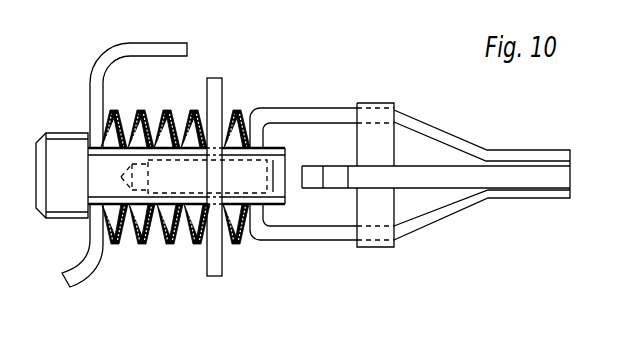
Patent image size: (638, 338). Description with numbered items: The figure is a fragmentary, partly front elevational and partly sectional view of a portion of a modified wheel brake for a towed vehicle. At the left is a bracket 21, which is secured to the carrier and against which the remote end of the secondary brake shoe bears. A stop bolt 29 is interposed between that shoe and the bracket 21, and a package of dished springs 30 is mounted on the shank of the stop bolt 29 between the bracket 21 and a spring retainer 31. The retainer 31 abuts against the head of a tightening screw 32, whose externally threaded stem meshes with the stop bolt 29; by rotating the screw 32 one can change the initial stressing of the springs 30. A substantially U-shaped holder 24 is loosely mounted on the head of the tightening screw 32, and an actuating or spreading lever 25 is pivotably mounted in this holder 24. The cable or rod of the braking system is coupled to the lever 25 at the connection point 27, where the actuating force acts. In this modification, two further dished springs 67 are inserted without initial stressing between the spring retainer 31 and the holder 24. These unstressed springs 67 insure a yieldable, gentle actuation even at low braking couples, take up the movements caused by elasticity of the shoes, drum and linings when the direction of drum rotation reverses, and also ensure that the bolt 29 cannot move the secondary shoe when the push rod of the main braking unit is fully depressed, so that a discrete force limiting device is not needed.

The bracket 21 is at (82, 267).
The holder 24 is at (308, 117).
The actuating lever 25 is at (408, 175).
The connection point 27 is at (335, 157).
The stop bolt 29 is at (70, 148).
The dished springs 30 is at (147, 242).
The spring retainer 31 is at (213, 276).
The tightening screw 32 is at (279, 203).
The dished springs 67 is at (240, 240).